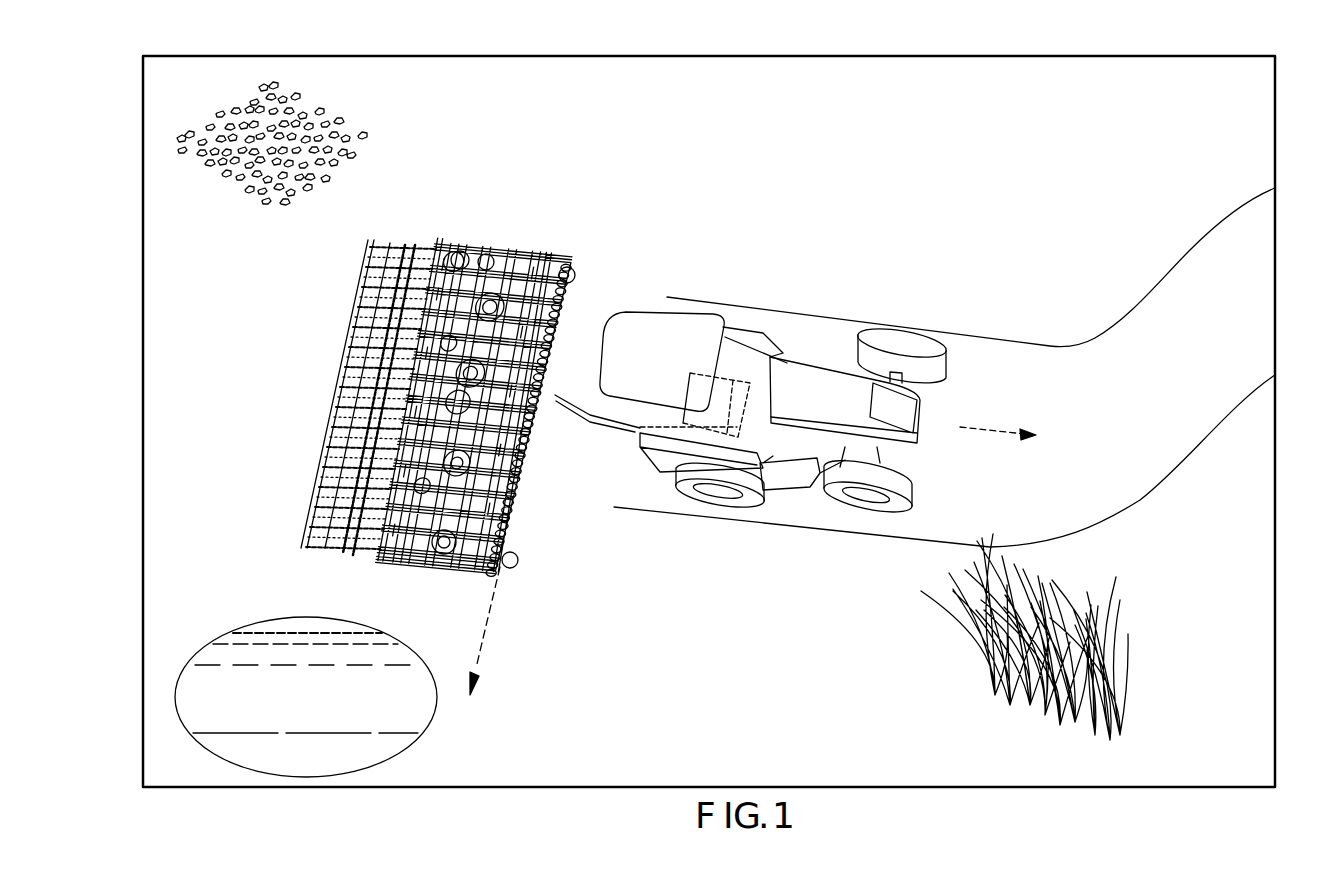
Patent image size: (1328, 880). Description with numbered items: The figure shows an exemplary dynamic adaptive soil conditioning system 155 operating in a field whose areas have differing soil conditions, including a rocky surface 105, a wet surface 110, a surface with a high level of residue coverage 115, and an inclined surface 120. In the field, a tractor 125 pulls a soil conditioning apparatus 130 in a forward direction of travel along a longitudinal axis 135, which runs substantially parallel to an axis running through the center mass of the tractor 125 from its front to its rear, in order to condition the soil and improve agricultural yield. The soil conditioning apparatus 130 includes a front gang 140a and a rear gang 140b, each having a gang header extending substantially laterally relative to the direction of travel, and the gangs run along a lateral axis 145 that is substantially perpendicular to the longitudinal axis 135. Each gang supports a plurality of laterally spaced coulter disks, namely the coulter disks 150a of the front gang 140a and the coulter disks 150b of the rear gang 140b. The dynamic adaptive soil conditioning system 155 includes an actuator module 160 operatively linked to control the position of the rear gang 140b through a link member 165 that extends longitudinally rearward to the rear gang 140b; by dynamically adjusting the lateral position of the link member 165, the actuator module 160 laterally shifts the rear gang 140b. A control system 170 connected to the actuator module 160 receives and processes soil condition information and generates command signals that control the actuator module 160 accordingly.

The rocky surface 105 is at (383, 122).
The wet surface 110 is at (1276, 122).
The surface with a high level of residue coverage 115 is at (930, 660).
The inclined surface 120 is at (1187, 250).
The tractor 125 is at (774, 389).
The soil conditioning apparatus 130 is at (470, 366).
The longitudinal axis 135 is at (983, 428).
The front gang 140a is at (520, 548).
The rear gang 140b is at (481, 248).
The lateral axis 145 is at (485, 640).
The coulter disks of the front gang 150a is at (565, 262).
The coulter disks of the rear gang 150b is at (458, 247).
The dynamic adaptive soil conditioning system 155 is at (655, 140).
The actuator module 160 is at (373, 540).
The link member 165 is at (418, 550).
The control system 170 is at (727, 378).